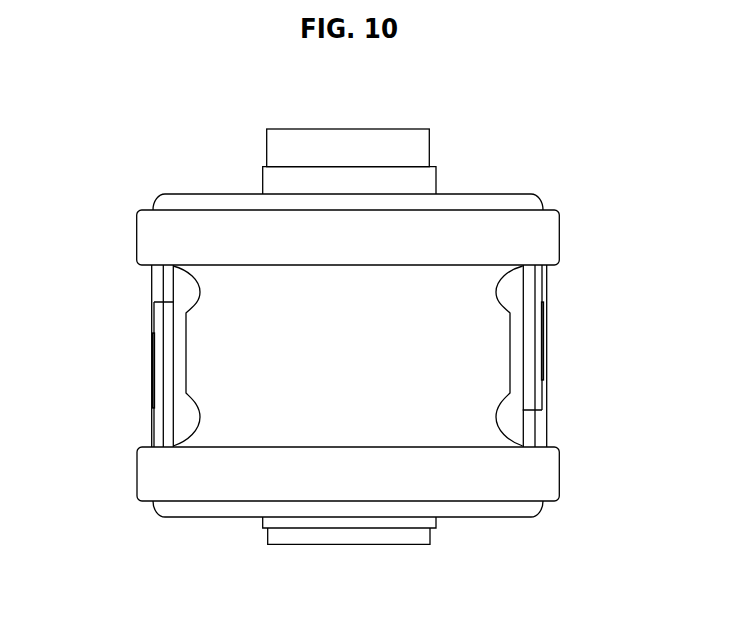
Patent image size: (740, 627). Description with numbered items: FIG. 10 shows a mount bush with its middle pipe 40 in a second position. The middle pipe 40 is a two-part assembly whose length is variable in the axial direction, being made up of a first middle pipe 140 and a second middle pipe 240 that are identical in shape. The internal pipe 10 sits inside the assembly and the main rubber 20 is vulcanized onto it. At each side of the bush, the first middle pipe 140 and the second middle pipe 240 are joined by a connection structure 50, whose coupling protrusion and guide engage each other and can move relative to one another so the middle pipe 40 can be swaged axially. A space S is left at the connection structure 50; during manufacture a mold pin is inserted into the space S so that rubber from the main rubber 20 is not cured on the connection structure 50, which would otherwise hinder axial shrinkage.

The internal pipe 10 is at (310, 143).
The main rubber 20 is at (417, 175).
The middle pipe 40 is at (387, 362).
The first middle pipe 140 is at (520, 200).
The second middle pipe 240 is at (508, 509).
The connection structure 50 is at (151, 369).
The space S is at (517, 348).